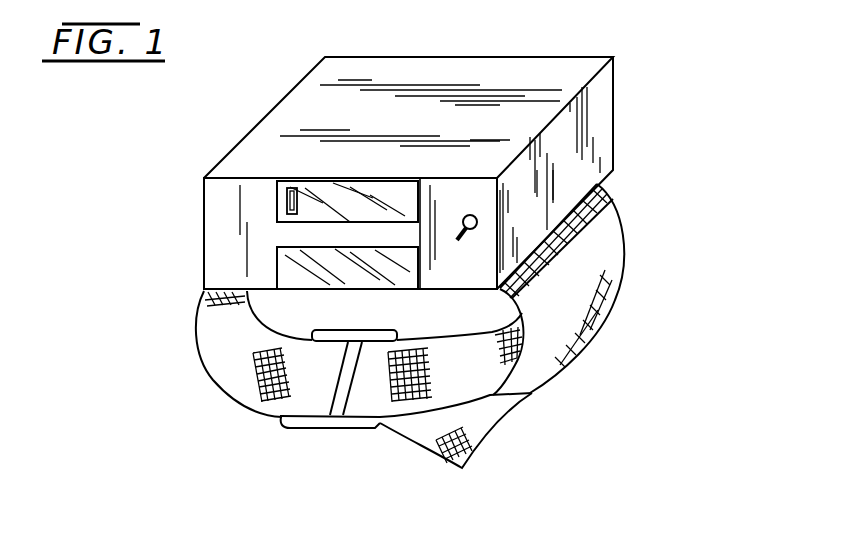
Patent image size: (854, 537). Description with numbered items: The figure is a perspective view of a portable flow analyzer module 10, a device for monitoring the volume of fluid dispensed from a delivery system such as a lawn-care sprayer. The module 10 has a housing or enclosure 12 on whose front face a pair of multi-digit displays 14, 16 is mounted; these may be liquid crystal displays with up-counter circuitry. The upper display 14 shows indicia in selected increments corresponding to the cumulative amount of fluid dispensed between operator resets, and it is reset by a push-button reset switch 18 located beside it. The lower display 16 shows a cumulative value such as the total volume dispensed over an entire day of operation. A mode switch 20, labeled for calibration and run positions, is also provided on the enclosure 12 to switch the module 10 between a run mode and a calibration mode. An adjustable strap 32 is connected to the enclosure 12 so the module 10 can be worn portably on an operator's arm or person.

The portable flow analyzer module 10 is at (717, 2).
The housing or enclosure 12 is at (603, 117).
The multi-digit display 14 is at (330, 195).
The multi-digit display 16 is at (288, 270).
The push-button reset switch 18 is at (286, 204).
The mode switch 20 is at (478, 225).
The adjustable strap 32 is at (585, 264).